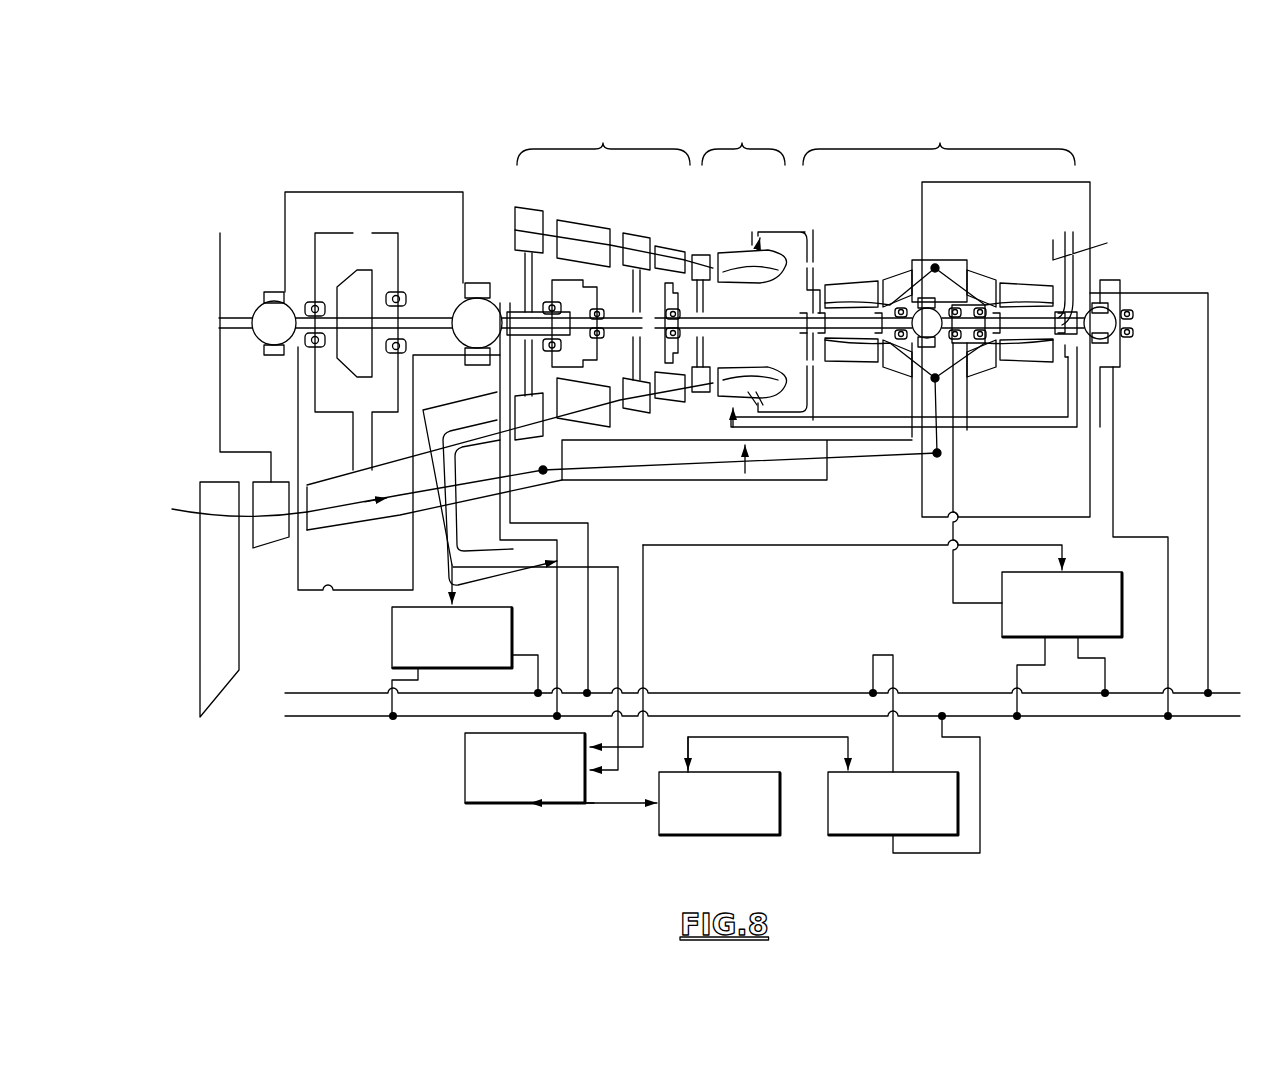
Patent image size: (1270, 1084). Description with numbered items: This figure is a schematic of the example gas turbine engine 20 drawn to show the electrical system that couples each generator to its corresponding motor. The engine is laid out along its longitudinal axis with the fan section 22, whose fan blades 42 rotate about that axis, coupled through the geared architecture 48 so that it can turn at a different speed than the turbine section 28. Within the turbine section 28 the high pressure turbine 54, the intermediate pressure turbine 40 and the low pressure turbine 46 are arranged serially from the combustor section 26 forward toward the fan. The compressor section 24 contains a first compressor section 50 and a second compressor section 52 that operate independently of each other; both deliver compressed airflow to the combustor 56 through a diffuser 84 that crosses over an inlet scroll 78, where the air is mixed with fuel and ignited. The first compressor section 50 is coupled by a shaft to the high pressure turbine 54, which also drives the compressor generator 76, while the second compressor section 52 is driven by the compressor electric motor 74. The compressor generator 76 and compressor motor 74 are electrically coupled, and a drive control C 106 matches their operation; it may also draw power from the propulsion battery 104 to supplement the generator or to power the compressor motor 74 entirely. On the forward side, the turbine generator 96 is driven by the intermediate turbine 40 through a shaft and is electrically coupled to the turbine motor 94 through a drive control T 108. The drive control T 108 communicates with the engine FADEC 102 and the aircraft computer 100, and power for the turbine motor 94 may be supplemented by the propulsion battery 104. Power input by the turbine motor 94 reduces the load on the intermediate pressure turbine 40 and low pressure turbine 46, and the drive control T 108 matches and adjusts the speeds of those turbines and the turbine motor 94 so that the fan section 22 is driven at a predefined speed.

The gas turbine engine 20 is at (1152, 106).
The fan section 22 is at (209, 745).
The compressor section 24 is at (940, 143).
The combustor section 26 is at (742, 143).
The turbine section 28 is at (603, 143).
The intermediate pressure turbine 40 is at (634, 407).
The fan blades 42 is at (216, 641).
The low pressure turbine 46 is at (533, 425).
The geared architecture 48 is at (360, 277).
The first compressor section 50 is at (855, 355).
The second compressor section 52 is at (1028, 350).
The high pressure turbine 54 is at (704, 388).
The combustor 56 is at (758, 402).
The compressor electric motor 74 is at (1103, 294).
The compressor generator 76 is at (942, 296).
The inlet scroll 78 is at (933, 465).
The diffuser 84 is at (745, 473).
The turbine motor 94 is at (480, 282).
The turbine generator 96 is at (260, 285).
The aircraft computer 100 is at (659, 832).
The engine FADEC 102 is at (465, 795).
The propulsion battery 104 is at (828, 832).
The drive control C 106 is at (1002, 622).
The drive control T 108 is at (392, 655).